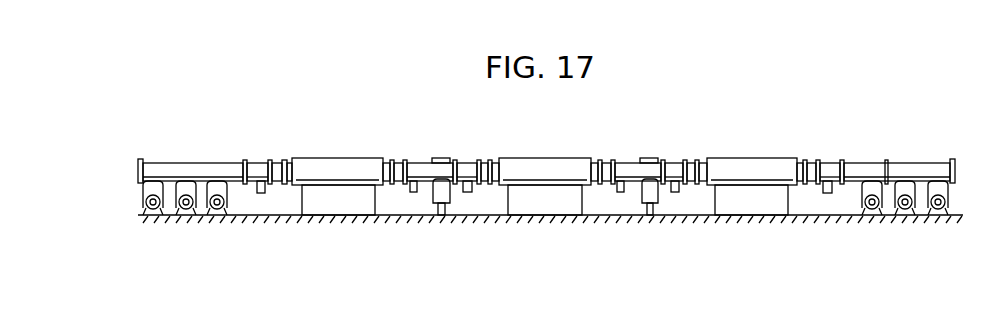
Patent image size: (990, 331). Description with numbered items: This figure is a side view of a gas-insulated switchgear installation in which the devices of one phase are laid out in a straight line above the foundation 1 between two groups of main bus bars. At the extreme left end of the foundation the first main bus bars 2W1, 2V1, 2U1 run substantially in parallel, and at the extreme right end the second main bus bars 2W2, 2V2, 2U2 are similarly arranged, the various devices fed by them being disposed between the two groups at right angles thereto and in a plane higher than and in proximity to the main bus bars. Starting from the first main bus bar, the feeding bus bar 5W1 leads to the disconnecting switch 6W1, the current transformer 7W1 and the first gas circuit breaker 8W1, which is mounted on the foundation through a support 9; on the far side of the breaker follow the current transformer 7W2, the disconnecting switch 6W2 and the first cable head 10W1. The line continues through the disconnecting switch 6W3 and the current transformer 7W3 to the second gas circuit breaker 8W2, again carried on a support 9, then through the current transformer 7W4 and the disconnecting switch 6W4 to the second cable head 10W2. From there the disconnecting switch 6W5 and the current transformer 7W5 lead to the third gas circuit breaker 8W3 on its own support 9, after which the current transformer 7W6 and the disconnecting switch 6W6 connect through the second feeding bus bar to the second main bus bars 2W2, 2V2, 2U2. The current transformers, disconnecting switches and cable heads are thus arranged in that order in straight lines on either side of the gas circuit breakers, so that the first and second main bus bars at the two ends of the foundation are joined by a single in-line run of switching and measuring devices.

The floor / foundation 1 is at (572, 222).
The feeding bus bar 5W1 is at (174, 169).
The disconnecting switch 6W1 is at (254, 166).
The disconnecting switch 6W2 is at (420, 164).
The disconnecting switch 6W3 is at (465, 164).
The disconnecting switch 6W4 is at (628, 164).
The disconnecting switch 6W5 is at (695, 126).
The disconnecting switch 6W6 is at (833, 162).
The current transformer 7W1 is at (270, 164).
The current transformer 7W2 is at (402, 149).
The current transformer 7W3 is at (489, 162).
The current transformer 7W4 is at (608, 160).
The current transformer 7W5 is at (690, 162).
The current transformer 7W6 is at (817, 162).
The gas circuit breaker 8W1 is at (342, 164).
The gas circuit breaker 8W2 is at (542, 135).
The gas circuit breaker 8W3 is at (733, 160).
The support 9 is at (356, 200).
The first cable head 10W1 is at (452, 200).
The second cable head 10W2 is at (664, 200).
The first main bus bar 2W1 is at (152, 216).
The first main bus bar 2V1 is at (190, 216).
The first main bus bar 2U1 is at (214, 216).
The second main bus bar 2W2 is at (873, 216).
The second main bus bar 2V2 is at (905, 216).
The second main bus bar 2U2 is at (940, 216).